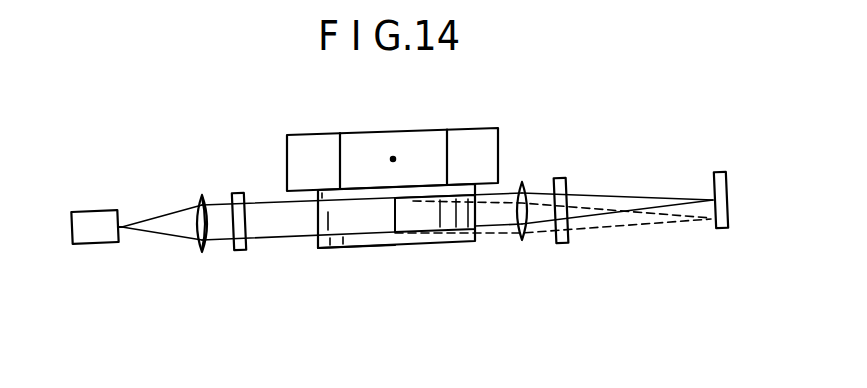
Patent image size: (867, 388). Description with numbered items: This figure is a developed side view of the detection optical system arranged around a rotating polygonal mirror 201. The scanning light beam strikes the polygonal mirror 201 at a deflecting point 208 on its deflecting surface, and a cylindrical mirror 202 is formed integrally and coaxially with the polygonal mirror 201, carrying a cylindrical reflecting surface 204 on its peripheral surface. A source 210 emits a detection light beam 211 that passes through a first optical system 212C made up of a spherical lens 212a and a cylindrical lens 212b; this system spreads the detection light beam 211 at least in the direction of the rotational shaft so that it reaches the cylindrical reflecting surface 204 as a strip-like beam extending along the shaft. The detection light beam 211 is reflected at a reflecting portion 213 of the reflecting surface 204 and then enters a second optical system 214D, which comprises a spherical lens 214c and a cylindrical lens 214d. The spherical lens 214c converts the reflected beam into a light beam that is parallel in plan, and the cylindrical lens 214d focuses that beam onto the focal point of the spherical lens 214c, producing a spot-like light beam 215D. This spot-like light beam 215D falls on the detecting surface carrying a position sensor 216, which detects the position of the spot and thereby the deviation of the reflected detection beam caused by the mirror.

The rotating polygonal mirror 201 is at (493, 128).
The deflecting point 208 is at (394, 157).
The cylindrical reflecting surface 204 is at (341, 248).
The cylindrical mirror 202 is at (367, 248).
The reflecting portion 213 is at (396, 216).
The source 210 is at (99, 244).
The detection light beam 211 is at (160, 234).
The spherical lens 212a is at (203, 253).
The cylindrical lens 212b is at (256, 255).
The first optical system 212C is at (223, 275).
The spherical lens 214c is at (521, 241).
The cylindrical lens 214d is at (593, 238).
The second optical system 214D is at (568, 260).
The spot-like light beam 215D is at (711, 197).
The position sensor 216 is at (723, 172).